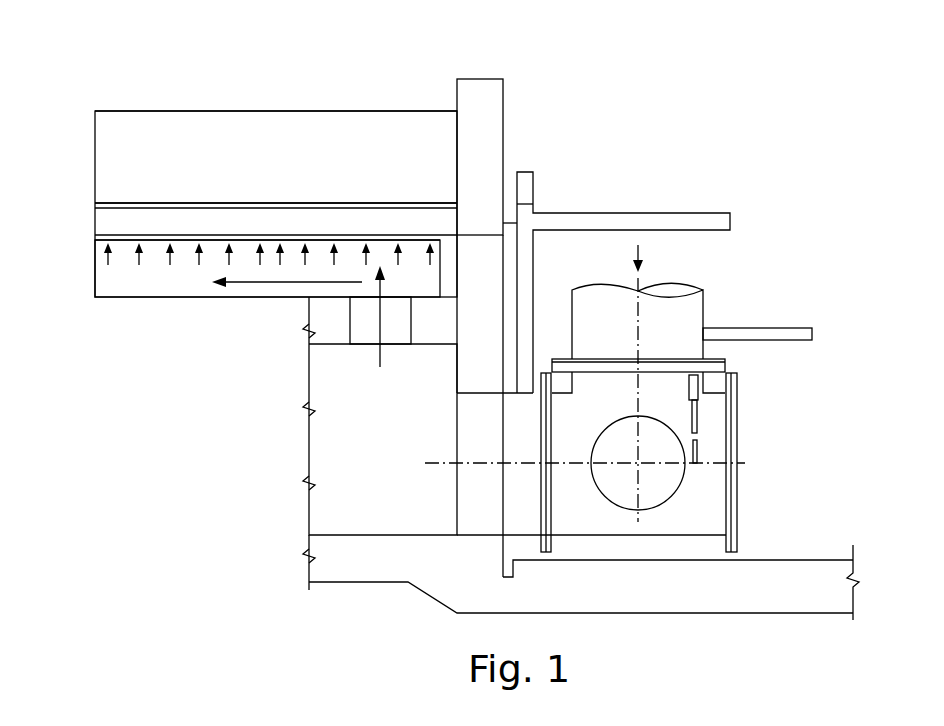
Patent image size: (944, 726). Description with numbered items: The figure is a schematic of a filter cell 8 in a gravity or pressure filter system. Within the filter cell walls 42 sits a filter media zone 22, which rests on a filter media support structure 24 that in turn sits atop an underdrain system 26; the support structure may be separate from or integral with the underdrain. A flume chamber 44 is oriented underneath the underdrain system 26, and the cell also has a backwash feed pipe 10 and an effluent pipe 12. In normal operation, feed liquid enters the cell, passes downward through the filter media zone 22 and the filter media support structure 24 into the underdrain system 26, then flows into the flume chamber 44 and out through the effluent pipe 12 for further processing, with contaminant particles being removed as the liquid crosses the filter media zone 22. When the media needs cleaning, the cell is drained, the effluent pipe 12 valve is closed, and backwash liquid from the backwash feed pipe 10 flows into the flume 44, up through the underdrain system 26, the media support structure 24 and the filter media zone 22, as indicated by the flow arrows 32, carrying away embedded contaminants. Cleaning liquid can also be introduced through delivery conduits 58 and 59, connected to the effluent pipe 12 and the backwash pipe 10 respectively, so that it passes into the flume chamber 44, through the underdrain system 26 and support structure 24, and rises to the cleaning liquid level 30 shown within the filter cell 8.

The filter cell 8 is at (157, 78).
The filter media zone 22 is at (201, 164).
The cleaning liquid level 30 is at (360, 203).
The filter media support structure 24 is at (97, 220).
The underdrain system 26 is at (182, 290).
The flow arrows 32 is at (138, 256).
The filter cell walls 42 is at (503, 118).
The delivery conduit 58 is at (660, 213).
The backwash feed pipe 10 is at (712, 299).
The delivery conduit 59 is at (803, 328).
The effluent pipe 12 is at (677, 487).
The flume chamber 44 is at (327, 442).